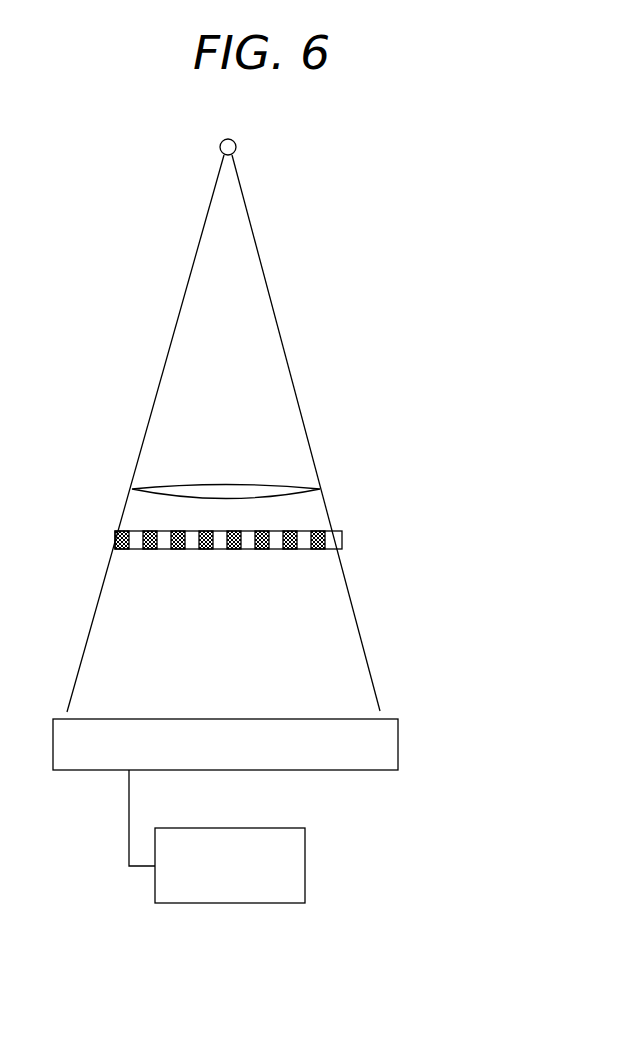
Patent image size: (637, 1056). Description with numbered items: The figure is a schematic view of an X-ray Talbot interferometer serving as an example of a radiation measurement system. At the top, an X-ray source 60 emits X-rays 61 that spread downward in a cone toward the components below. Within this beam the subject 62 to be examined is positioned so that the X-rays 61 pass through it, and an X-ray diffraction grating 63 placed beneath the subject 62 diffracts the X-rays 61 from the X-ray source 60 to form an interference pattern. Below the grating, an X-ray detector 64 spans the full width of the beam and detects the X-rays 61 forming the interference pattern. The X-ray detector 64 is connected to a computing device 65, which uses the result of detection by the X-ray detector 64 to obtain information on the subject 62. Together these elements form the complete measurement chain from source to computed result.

The X-ray source 60 is at (236, 144).
The X-rays 61 is at (288, 353).
The subject 62 is at (302, 487).
The grating / mask 63 is at (342, 540).
The X-ray detector 64 is at (398, 742).
The computing device 65 is at (305, 866).